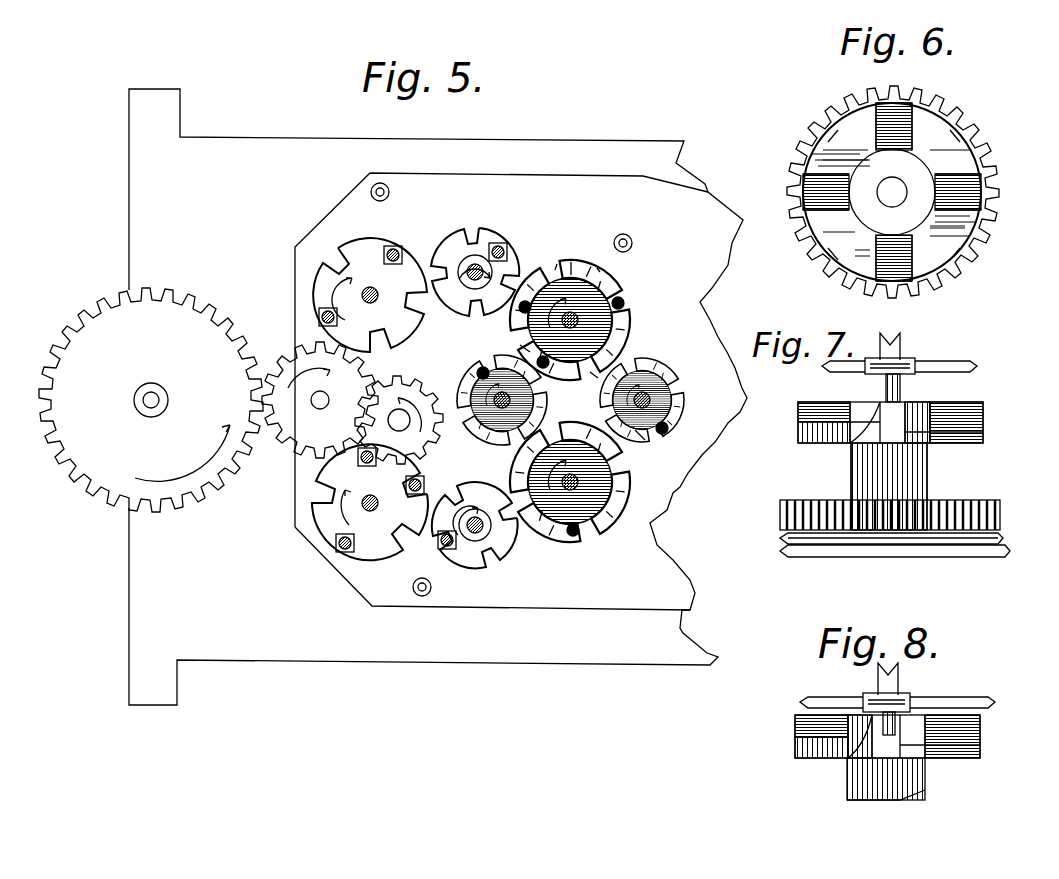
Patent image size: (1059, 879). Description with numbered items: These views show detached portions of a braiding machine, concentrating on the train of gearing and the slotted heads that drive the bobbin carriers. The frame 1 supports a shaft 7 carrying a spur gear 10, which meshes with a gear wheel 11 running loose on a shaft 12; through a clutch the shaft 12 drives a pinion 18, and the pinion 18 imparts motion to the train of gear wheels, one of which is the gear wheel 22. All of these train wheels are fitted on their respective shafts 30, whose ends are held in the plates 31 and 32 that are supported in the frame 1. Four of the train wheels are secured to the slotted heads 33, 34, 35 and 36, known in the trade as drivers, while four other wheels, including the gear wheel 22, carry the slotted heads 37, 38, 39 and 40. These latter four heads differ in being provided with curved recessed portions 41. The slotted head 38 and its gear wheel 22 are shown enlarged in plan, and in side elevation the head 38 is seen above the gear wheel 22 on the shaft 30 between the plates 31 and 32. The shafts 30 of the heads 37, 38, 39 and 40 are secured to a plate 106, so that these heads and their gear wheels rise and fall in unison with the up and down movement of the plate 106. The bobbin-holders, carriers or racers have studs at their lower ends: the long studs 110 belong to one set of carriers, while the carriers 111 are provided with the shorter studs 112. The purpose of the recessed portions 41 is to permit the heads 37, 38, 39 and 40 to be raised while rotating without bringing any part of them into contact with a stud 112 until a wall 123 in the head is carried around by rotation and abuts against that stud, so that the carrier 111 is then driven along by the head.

In FIG. 5, the frame 1 is at (438, 397).
In FIG. 5, the shaft 7 is at (142, 401).
In FIG. 5, the spur gear 10 is at (90, 333).
In FIG. 5, the gear wheel 11 is at (307, 416).
In FIG. 5, the shaft 12 is at (322, 400).
In FIG. 5, the pinion 18 is at (432, 447).
In FIG. 6, the gear wheel 22 is at (803, 132).
In FIG. 7, the gear wheel 22 is at (783, 513).
In FIG. 5, the shaft 30 is at (380, 294).
In FIG. 7, the plate 31 is at (948, 364).
In FIG. 8, the plate 31 is at (938, 697).
In FIG. 5, the plate 32 is at (535, 618).
In FIG. 7, the plate 32 is at (808, 555).
In FIG. 5, the slotted head 33 is at (373, 556).
In FIG. 5, the slotted head 34 is at (472, 568).
In FIG. 5, the slotted head 35 is at (475, 240).
In FIG. 5, the slotted head 36 is at (366, 248).
In FIG. 5, the slotted head 37 is at (600, 520).
In FIG. 5, the slotted head 38 is at (660, 402).
In FIG. 6, the slotted head 38 is at (892, 192).
In FIG. 7, the slotted head 38 is at (905, 422).
In FIG. 8, the slotted head 38 is at (901, 757).
In FIG. 5, the slotted head 39 is at (600, 323).
In FIG. 5, the slotted head 40 is at (465, 398).
In FIG. 5, the recessed portion 41 is at (585, 268).
In FIG. 6, the recessed portion 41 is at (845, 124).
In FIG. 7, the recessed portion 41 is at (815, 440).
In FIG. 8, the recessed portion 41 is at (795, 735).
In FIG. 5, the plate 106 is at (528, 352).
In FIG. 7, the plate 106 is at (782, 540).
In FIG. 5, the stud 110 is at (397, 250).
In FIG. 7, the bobbin-holder 111 is at (896, 346).
In FIG. 8, the bobbin-holder 111 is at (895, 680).
In FIG. 5, the stud 112 is at (480, 370).
In FIG. 7, the stud 112 is at (902, 390).
In FIG. 8, the stud 112 is at (885, 735).
In FIG. 5, the wall 123 is at (570, 262).
In FIG. 6, the wall 123 is at (903, 105).
In FIG. 7, the wall 123 is at (815, 418).
In FIG. 8, the wall 123 is at (810, 730).